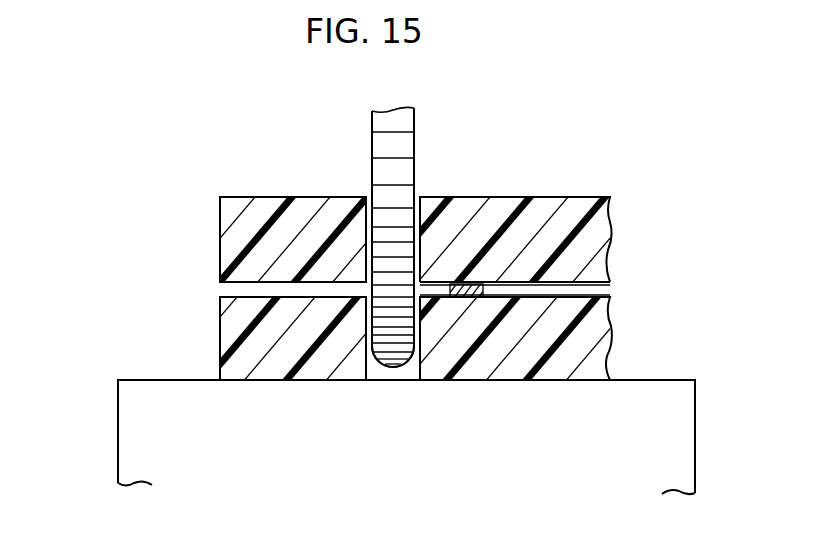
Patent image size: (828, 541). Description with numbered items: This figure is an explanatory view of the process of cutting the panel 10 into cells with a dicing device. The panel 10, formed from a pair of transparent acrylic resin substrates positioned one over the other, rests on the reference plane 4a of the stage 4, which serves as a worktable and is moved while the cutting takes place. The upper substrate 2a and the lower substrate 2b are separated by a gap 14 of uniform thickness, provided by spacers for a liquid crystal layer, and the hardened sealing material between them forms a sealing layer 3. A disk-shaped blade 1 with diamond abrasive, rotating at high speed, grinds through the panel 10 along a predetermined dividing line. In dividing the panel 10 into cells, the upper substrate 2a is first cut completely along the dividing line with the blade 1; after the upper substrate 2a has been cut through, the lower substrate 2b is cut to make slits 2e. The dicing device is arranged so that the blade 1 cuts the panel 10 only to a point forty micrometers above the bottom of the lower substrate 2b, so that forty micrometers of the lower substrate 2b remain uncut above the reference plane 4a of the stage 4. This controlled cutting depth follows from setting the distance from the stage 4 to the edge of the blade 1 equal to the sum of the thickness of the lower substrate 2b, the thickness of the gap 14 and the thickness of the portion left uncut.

The blade 1 is at (414, 147).
The upper substrate 2a is at (600, 238).
The lower substrate 2b is at (592, 328).
The slit 2e is at (422, 320).
The sealing layer 3 is at (485, 291).
The stage 4 is at (146, 430).
The reference plane 4a is at (177, 380).
The panel 10 is at (409, 274).
The gap 14 is at (598, 292).